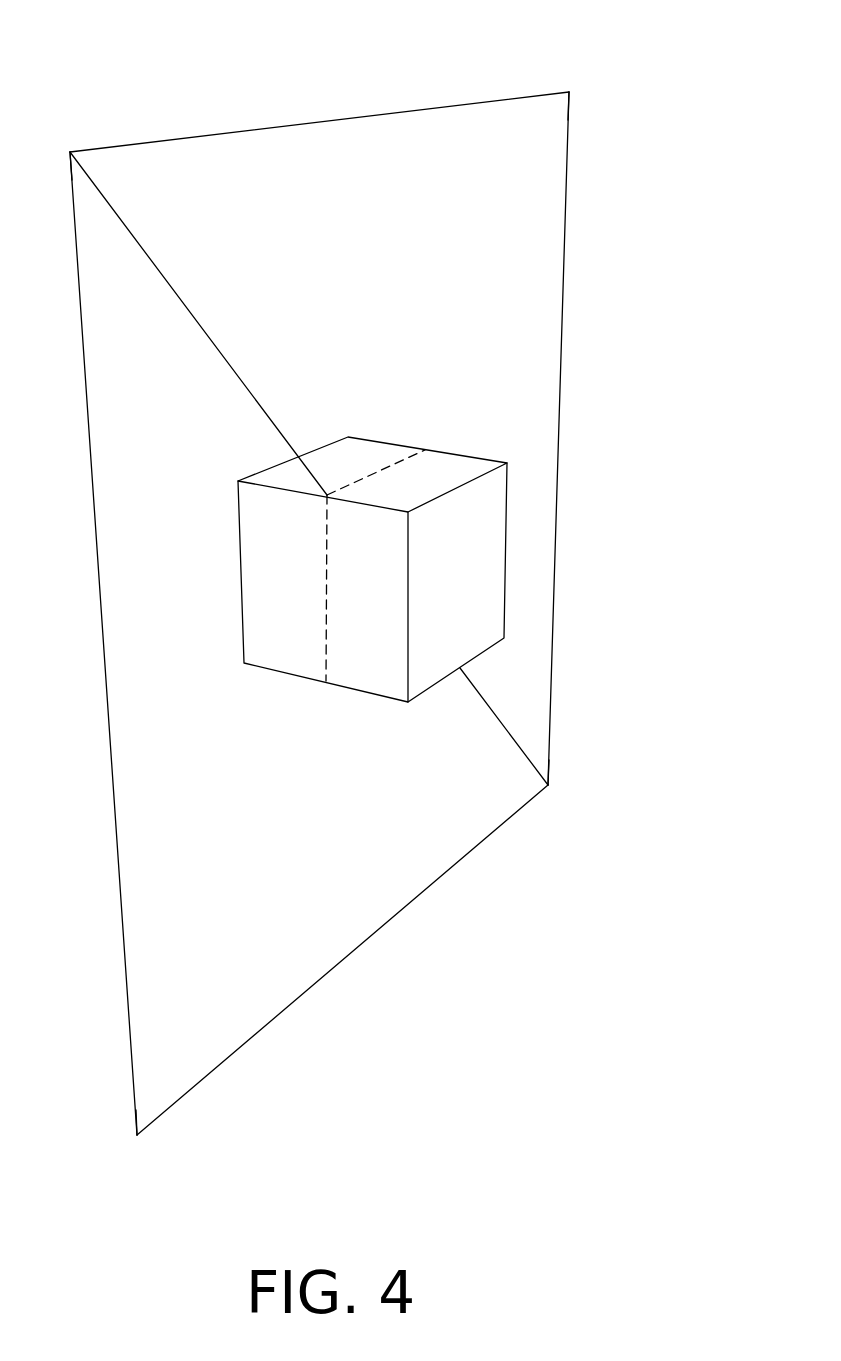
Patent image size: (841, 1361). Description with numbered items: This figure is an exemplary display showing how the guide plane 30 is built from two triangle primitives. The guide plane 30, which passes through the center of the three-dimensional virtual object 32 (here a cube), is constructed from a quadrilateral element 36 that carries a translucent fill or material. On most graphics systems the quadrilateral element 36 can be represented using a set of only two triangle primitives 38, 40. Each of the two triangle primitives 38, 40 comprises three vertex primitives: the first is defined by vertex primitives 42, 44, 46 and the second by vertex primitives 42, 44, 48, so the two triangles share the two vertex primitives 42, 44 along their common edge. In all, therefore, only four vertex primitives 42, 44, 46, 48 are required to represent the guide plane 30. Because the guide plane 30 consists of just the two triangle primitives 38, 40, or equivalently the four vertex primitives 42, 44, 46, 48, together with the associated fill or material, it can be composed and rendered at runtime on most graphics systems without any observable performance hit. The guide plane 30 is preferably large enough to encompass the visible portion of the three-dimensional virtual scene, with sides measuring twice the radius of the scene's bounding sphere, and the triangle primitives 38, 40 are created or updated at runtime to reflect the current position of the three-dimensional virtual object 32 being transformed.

The guide plane 30 is at (450, 270).
The 3D virtual object 32 is at (506, 552).
The quadrilateral element 36 is at (569, 135).
The triangle primitive 38 is at (295, 907).
The triangle primitive 40 is at (527, 672).
The vertex primitive 42 is at (70, 152).
The vertex primitive 44 is at (548, 785).
The vertex primitive 46 is at (137, 1135).
The vertex primitive 48 is at (569, 92).